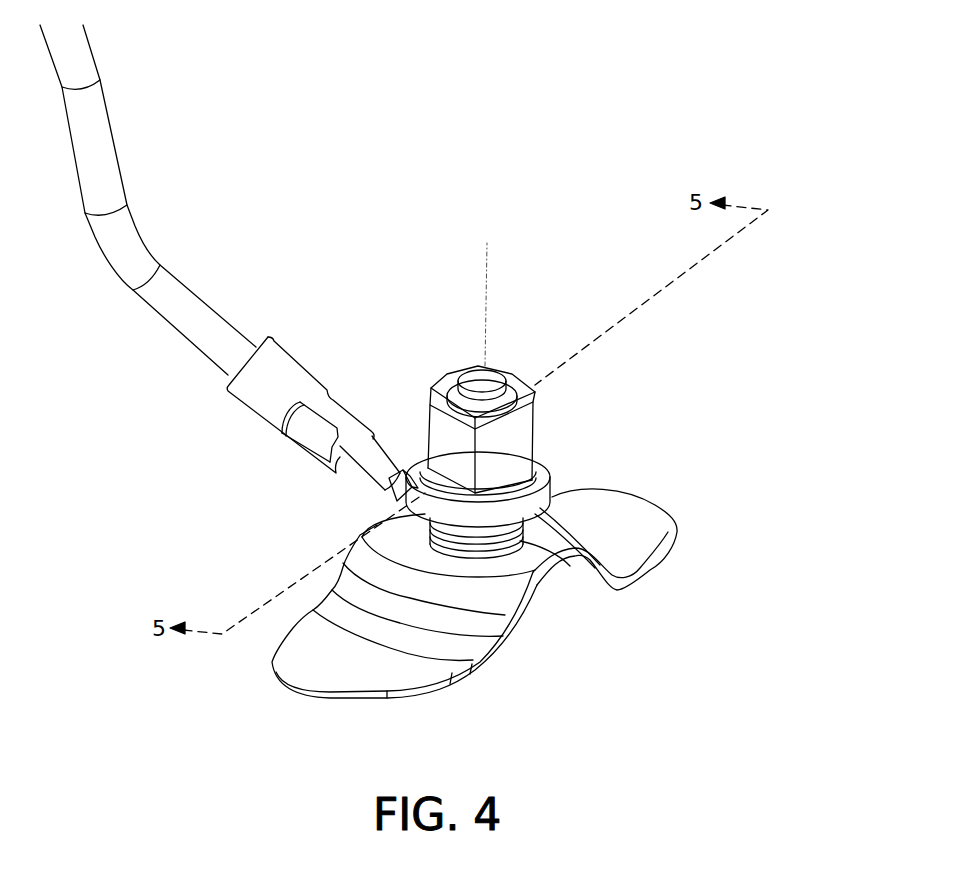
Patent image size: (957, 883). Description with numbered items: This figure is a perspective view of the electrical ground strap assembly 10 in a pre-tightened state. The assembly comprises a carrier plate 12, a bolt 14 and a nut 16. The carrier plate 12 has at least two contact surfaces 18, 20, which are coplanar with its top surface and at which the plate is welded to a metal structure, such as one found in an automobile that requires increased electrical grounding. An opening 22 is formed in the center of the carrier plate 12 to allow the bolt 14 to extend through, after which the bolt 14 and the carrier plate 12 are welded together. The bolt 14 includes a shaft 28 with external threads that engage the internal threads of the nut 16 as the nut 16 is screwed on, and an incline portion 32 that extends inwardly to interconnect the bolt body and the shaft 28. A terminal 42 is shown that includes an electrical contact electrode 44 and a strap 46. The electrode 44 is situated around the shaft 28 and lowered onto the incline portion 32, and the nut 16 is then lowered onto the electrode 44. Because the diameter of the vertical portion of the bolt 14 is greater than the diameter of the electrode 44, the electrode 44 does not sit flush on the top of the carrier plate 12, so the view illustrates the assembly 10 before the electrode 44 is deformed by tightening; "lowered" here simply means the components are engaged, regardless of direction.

The electrical ground strap assembly 10 is at (253, 517).
The carrier plate 12 is at (505, 599).
The bolt 14 is at (485, 378).
The nut 16 is at (537, 396).
The contact surface 18 is at (297, 652).
The contact surface 20 is at (617, 508).
The opening 22 is at (570, 566).
The shaft 28 is at (457, 385).
The incline portion 32 is at (487, 553).
The terminal 42 is at (337, 312).
The electrical contact electrode 44 is at (375, 526).
The strap 46 is at (167, 287).